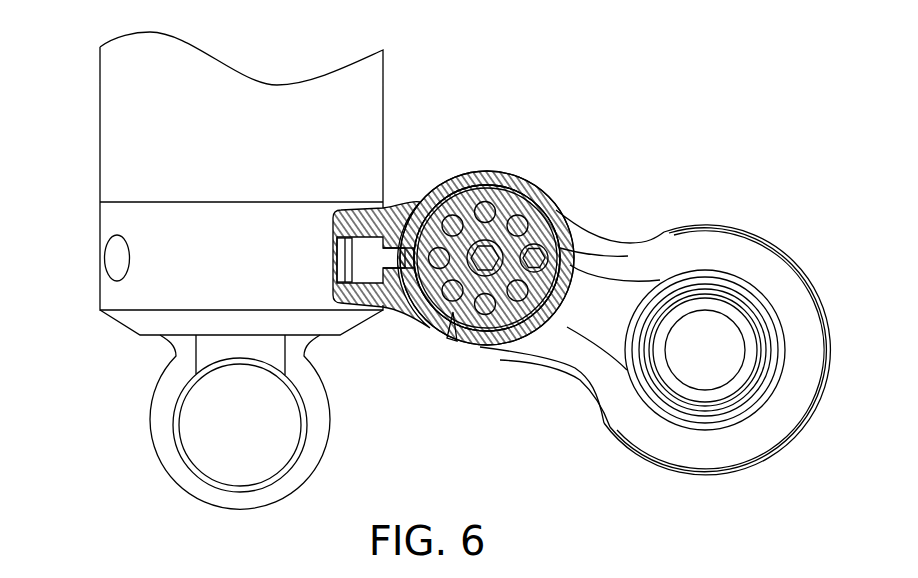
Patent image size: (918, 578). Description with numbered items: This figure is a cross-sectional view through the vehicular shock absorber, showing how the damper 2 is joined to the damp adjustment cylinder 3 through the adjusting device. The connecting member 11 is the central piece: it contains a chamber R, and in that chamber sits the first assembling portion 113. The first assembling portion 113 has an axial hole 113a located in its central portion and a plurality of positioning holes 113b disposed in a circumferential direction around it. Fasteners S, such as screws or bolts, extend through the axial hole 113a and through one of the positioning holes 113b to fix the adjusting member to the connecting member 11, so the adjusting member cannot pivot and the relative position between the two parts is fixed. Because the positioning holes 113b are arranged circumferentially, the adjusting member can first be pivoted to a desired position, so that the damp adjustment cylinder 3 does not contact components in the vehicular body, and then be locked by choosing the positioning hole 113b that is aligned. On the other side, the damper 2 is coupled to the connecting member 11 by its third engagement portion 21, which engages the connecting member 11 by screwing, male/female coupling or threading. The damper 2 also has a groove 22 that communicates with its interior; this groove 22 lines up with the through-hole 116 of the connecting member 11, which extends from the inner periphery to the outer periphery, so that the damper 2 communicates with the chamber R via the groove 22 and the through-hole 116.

The damper 2 is at (103, 125).
The third engagement portion 21 is at (115, 235).
The groove 22 is at (335, 215).
The through-hole 116 is at (370, 216).
The connecting member 11 is at (402, 300).
The first assembling portion 113 is at (533, 100).
The axial hole 113a is at (499, 244).
The positioning holes 113b is at (485, 201).
The fastener S is at (548, 256).
The chamber R is at (453, 313).
The damp adjustment cylinder 3 is at (733, 248).